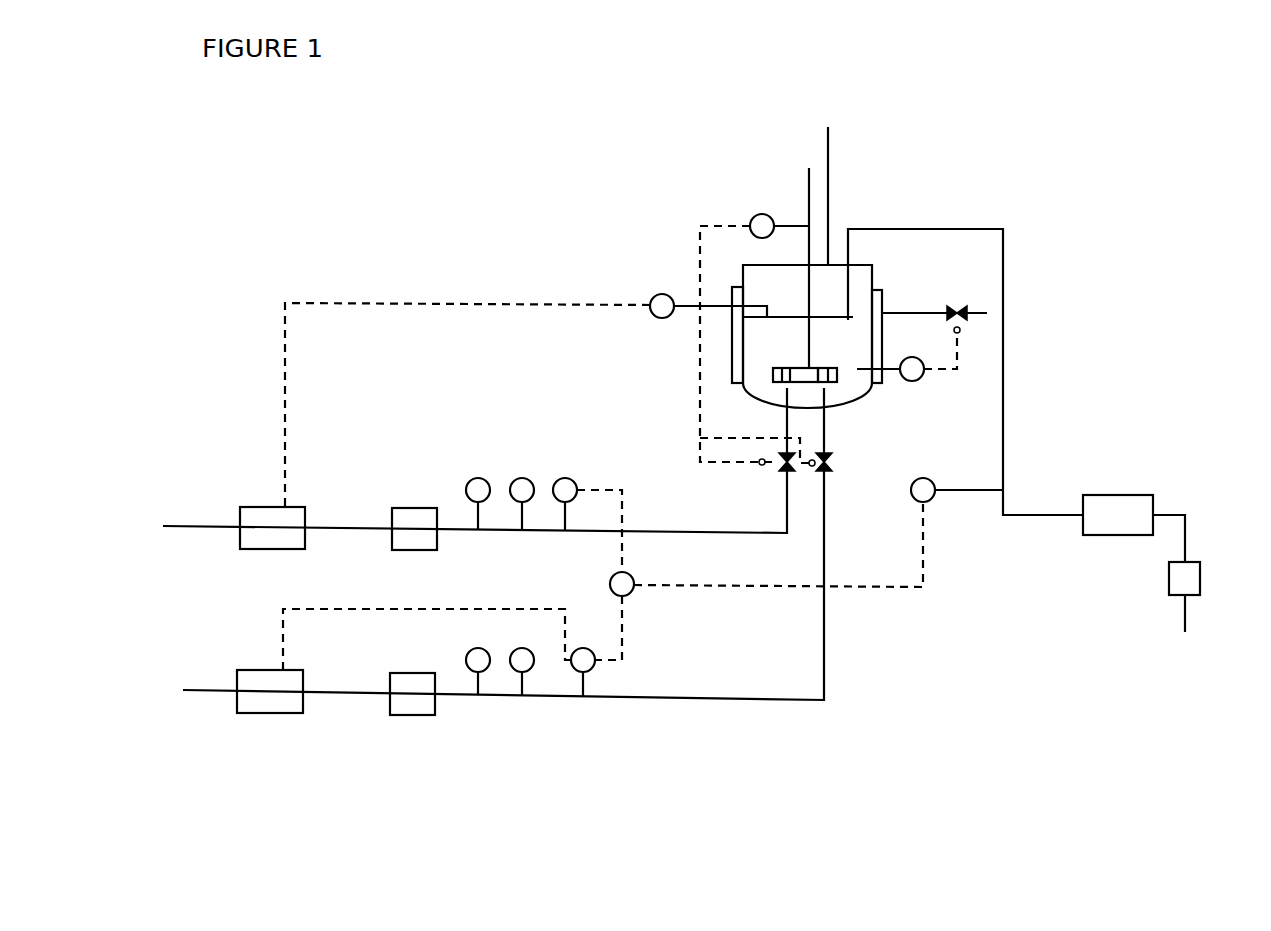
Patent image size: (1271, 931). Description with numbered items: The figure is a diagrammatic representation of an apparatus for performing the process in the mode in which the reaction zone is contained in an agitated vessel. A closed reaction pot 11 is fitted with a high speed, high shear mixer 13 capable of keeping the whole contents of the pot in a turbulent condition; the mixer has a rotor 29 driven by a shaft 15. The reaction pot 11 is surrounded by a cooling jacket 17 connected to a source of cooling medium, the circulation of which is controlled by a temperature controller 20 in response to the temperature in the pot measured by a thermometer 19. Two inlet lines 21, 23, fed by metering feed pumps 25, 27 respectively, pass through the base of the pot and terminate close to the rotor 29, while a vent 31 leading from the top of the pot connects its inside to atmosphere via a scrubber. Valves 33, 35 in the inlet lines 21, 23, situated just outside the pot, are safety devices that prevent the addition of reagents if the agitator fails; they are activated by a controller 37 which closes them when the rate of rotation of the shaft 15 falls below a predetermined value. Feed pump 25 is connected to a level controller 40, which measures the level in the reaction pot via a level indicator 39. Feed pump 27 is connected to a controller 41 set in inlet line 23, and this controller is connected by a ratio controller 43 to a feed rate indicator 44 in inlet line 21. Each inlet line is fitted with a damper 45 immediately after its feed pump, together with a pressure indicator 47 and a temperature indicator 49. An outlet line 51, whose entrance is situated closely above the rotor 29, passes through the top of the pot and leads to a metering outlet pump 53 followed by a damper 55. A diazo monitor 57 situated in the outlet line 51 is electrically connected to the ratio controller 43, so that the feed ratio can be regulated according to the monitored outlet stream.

The reaction pot 11 is at (828, 267).
The mixer 13 is at (834, 364).
The shaft 15 is at (809, 305).
The cooling jacket 17 is at (875, 312).
The thermometer 19 is at (1002, 337).
The temperature controller 20 is at (925, 377).
The inlet line 21 is at (735, 535).
The inlet line 23 is at (823, 632).
The metering feed pump 25 is at (255, 549).
The metering feed pump 27 is at (277, 713).
The rotor 29 is at (840, 381).
The vent 31 is at (826, 150).
The valve 33 is at (787, 472).
The valve 35 is at (824, 472).
The controller 37 is at (753, 218).
The level indicator 39 is at (661, 247).
The level controller 40 is at (653, 300).
The controller 41 is at (583, 673).
The ratio controller 43 is at (623, 597).
The feed rate indicator 44 is at (569, 478).
The damper 45 is at (405, 670).
The pressure indicator 47 is at (477, 502).
The temperature indicator 49 is at (522, 502).
The outlet line 51 is at (1003, 298).
The metering outlet pump 53 is at (1125, 495).
The damper 55 is at (1192, 562).
The diazo monitor 57 is at (932, 499).